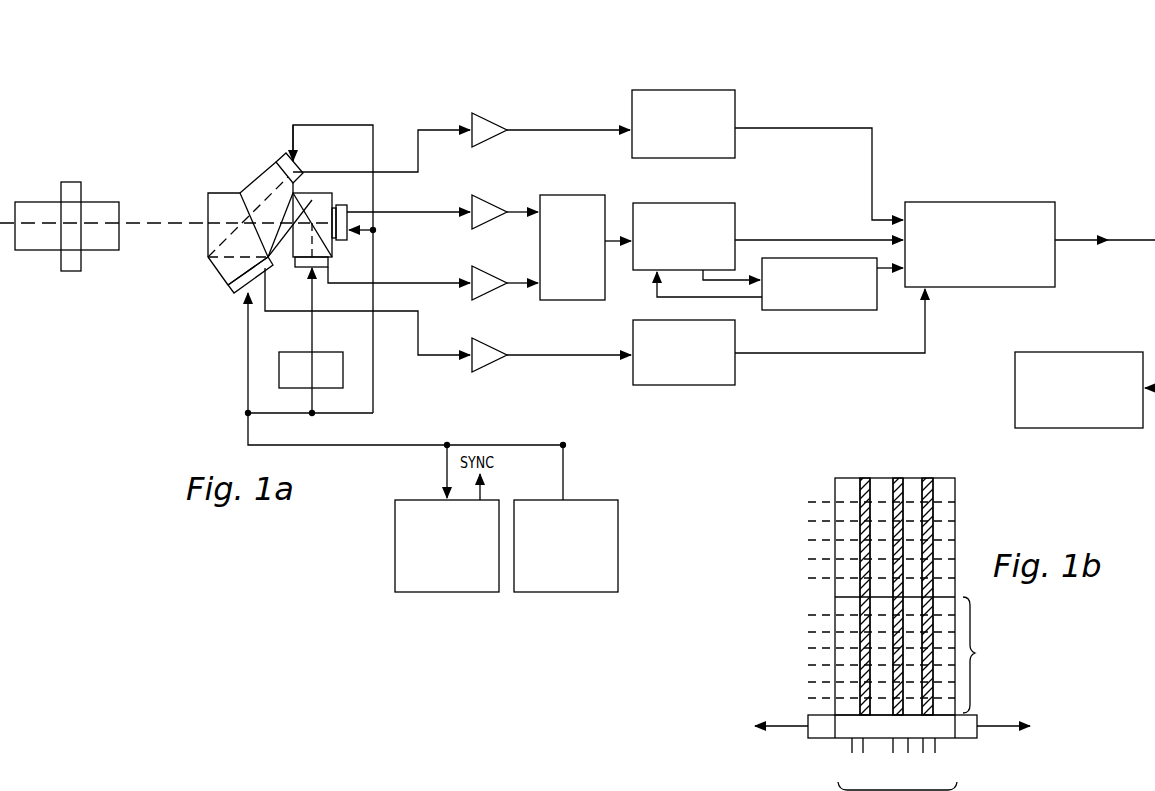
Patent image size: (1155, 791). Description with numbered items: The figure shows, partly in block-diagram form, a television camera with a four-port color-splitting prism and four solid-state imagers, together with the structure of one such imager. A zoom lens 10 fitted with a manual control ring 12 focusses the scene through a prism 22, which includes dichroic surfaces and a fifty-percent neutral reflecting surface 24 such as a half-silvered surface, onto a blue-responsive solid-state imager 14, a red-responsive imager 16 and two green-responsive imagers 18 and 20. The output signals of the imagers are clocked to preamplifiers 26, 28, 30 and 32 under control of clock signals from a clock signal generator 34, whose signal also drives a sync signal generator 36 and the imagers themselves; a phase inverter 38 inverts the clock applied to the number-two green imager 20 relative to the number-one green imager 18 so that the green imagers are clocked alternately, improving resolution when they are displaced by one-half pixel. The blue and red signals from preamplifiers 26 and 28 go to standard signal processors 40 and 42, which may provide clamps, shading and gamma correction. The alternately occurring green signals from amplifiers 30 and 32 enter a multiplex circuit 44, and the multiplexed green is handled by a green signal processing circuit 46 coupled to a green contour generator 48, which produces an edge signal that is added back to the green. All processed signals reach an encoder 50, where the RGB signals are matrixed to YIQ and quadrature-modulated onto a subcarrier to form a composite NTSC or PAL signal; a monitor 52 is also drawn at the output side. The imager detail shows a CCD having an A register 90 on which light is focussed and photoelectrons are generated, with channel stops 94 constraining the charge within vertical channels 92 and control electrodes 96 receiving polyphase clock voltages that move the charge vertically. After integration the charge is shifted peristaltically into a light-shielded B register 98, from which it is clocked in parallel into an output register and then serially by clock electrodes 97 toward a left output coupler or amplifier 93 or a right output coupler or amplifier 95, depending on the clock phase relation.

In FIG. 1A, the zoom lens 10 is at (103, 203).
In FIG. 1A, the manual control ring 12 is at (66, 185).
In FIG. 1A, the blue-responsive solid-state imager 14 is at (235, 298).
In FIG. 1A, the red-responsive imager 16 is at (292, 159).
In FIG. 1A, the green-responsive imager 18 is at (352, 233).
In FIG. 1A, the green-responsive imager 20 is at (297, 268).
In FIG. 1A, the prism 22 is at (220, 174).
In FIG. 1A, the 50% neutral reflecting surface 24 is at (335, 205).
In FIG. 1A, the preamplifier 26 is at (482, 340).
In FIG. 1A, the preamplifier 28 is at (482, 115).
In FIG. 1A, the preamplifier 30 is at (482, 268).
In FIG. 1A, the preamplifier 32 is at (482, 198).
In FIG. 1A, the clock signal generator 34 is at (591, 500).
In FIG. 1A, the sync signal generator 36 is at (421, 500).
In FIG. 1A, the phase inverter 38 is at (323, 352).
In FIG. 1A, the signal processor 40 is at (718, 386).
In FIG. 1A, the signal processor 42 is at (736, 116).
In FIG. 1A, the multiplex circuit 44 is at (600, 195).
In FIG. 1A, the green signal processing circuit 46 is at (736, 218).
In FIG. 1A, the green contour generator 48 is at (827, 311).
In FIG. 1A, the encoder 50 is at (1004, 202).
In FIG. 1A, the monitor 52 is at (1101, 428).
In FIG. 1B, the A register 90 is at (956, 520).
In FIG. 1B, the photosensitive columns 92 is at (940, 463).
In FIG. 1B, the left output coupler or amplifier 93 is at (804, 716).
In FIG. 1B, the channel stops 94 is at (929, 478).
In FIG. 1B, the right output coupler or amplifier 95 is at (978, 740).
In FIG. 1B, the control electrodes 96 is at (816, 502).
In FIG. 1B, the clock electrodes 97 is at (875, 751).
In FIG. 1B, the B register 98 is at (921, 655).